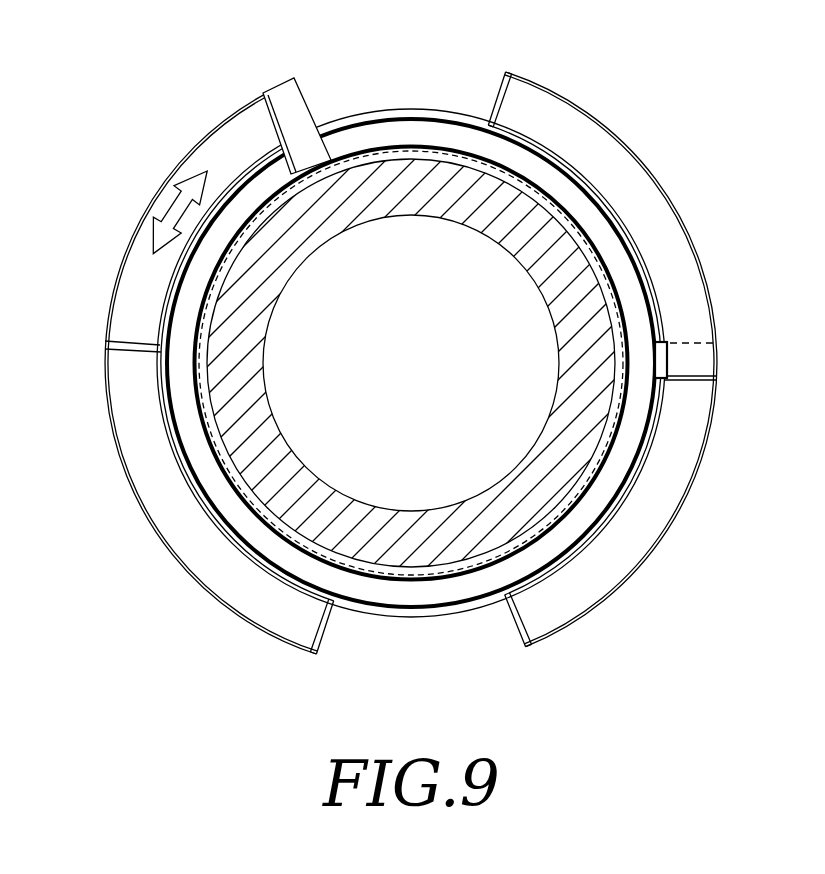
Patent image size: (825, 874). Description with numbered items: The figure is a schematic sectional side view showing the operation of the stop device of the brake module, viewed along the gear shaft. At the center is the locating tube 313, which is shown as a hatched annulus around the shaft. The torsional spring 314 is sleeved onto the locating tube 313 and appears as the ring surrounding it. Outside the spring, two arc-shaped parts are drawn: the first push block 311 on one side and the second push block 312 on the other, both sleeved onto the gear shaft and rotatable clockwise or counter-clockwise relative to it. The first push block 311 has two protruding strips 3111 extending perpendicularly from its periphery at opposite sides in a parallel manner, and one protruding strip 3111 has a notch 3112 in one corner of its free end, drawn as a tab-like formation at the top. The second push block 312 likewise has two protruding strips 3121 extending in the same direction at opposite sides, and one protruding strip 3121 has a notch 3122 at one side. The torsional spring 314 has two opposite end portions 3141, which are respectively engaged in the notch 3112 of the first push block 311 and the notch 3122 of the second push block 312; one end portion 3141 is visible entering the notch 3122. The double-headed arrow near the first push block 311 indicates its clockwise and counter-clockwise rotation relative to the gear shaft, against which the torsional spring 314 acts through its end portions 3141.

The first push block 311 is at (223, 122).
The protruding strip 3111 is at (205, 150).
The notch 3112 is at (292, 79).
The second push block 312 is at (641, 175).
The protruding strip 3121 is at (604, 122).
The notch 3122 is at (690, 343).
The locating tube 313 is at (585, 425).
The torsional spring 314 is at (417, 132).
The end portion 3141 is at (708, 362).